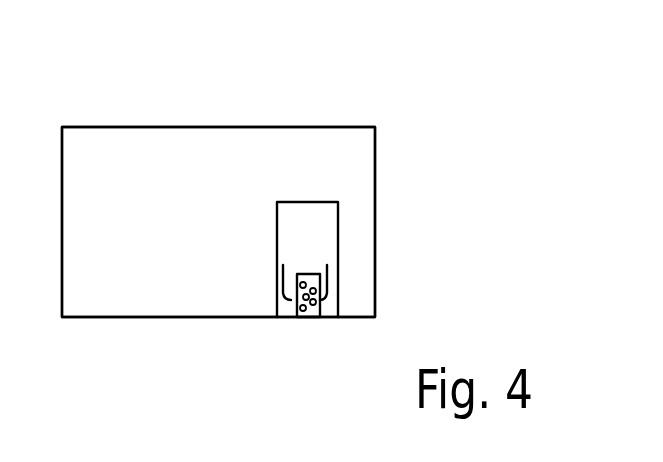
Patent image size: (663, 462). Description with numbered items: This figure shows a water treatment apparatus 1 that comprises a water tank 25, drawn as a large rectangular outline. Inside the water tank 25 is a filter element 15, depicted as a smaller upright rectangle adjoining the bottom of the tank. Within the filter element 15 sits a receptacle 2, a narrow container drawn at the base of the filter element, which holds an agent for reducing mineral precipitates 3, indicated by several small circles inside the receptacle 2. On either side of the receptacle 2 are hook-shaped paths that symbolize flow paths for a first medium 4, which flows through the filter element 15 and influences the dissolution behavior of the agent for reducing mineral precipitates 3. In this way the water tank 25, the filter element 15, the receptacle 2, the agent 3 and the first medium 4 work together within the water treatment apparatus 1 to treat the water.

The water treatment apparatus 1 is at (352, 73).
The water tank 25 is at (170, 160).
The filter element 15 is at (244, 248).
The second receptacle 2 is at (302, 330).
The agent for reducing mineral precipitates 3 is at (302, 281).
The first medium 4 is at (284, 296).